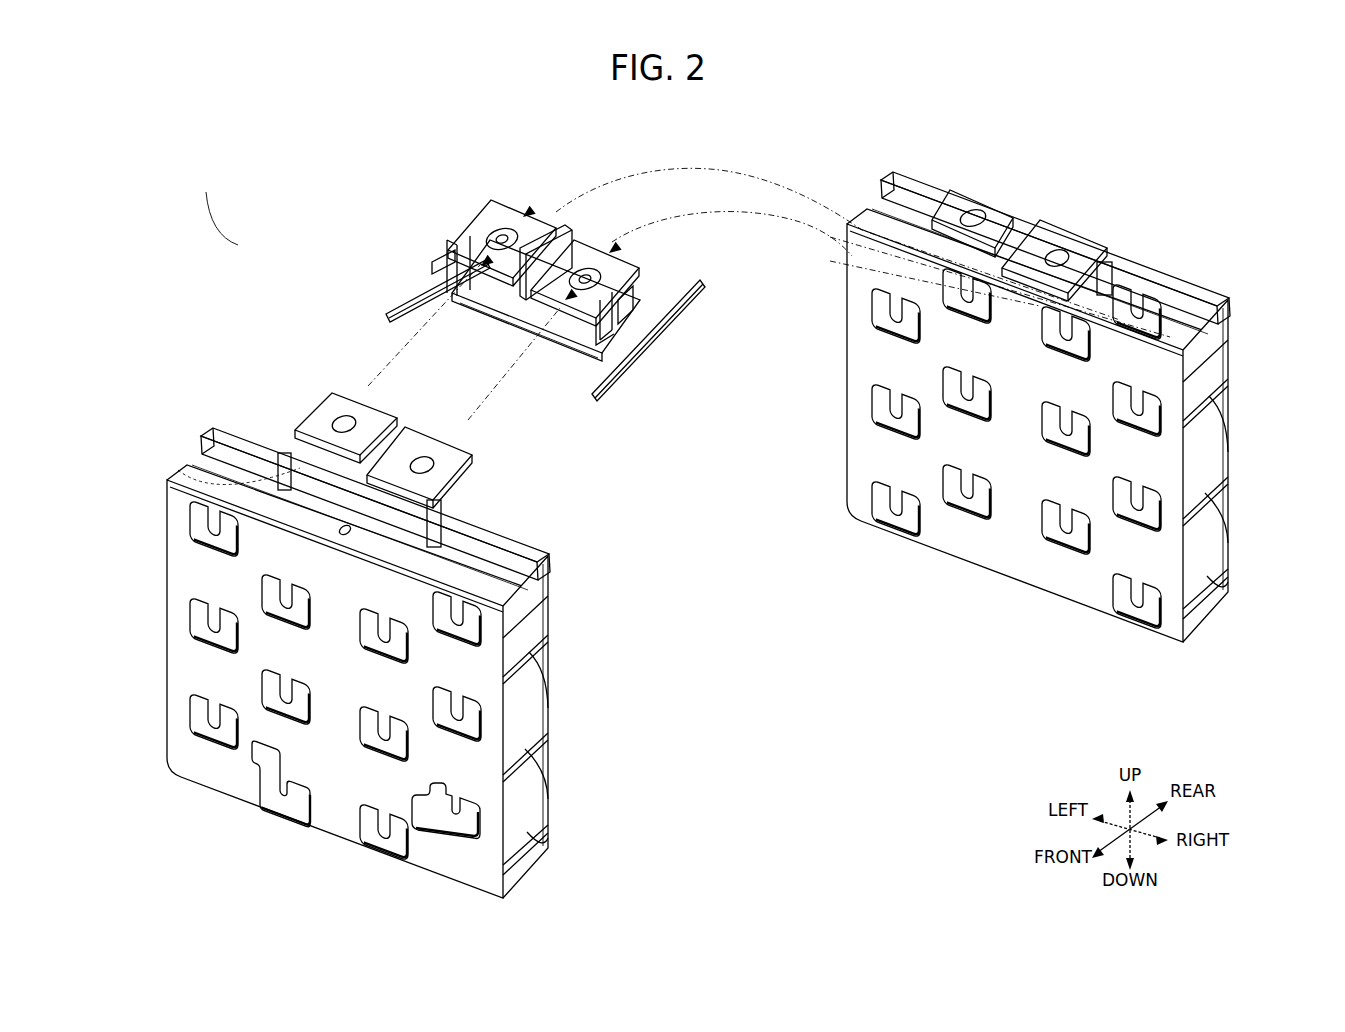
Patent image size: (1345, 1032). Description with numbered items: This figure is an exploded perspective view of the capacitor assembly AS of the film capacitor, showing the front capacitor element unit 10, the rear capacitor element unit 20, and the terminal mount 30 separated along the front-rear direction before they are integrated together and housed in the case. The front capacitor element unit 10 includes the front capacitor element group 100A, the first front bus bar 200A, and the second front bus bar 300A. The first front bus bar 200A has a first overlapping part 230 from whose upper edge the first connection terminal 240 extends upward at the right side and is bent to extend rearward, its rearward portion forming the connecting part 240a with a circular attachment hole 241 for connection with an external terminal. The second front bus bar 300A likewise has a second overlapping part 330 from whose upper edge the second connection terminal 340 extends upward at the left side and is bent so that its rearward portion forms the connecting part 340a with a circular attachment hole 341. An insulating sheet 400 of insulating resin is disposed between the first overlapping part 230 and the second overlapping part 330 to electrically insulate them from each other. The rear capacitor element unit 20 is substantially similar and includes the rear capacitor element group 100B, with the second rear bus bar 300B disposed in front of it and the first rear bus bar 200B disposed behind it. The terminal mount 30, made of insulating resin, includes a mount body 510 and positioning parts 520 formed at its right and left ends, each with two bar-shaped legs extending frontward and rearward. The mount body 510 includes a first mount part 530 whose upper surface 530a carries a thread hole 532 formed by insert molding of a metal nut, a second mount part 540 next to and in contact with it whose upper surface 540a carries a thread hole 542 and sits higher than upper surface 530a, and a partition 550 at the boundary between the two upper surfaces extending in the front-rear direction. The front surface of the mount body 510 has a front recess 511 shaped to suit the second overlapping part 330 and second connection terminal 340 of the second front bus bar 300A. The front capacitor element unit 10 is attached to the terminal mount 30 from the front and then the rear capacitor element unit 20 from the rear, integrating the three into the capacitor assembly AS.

The capacitor assembly AS is at (215, 207).
The front capacitor element unit 10 is at (566, 600).
The rear capacitor element unit 20 is at (1252, 322).
The terminal mount 30 is at (739, 276).
The front capacitor element group 100A is at (395, 681).
The rear capacitor element group 100B is at (1072, 420).
The first front bus bar 200A is at (213, 800).
The first rear bus bar 200B is at (1200, 255).
The first overlapping part 230 is at (325, 497).
The first connection terminal 240 is at (775, 349).
The connecting part 240a is at (468, 450).
The circular attachment hole 241 is at (421, 455).
The second front bus bar 300A is at (389, 527).
The second rear bus bar 300B is at (970, 575).
The second overlapping part 330 is at (1088, 278).
The second connection terminal 340 is at (632, 307).
The connecting part 340a is at (325, 417).
The circular attachment hole 341 is at (340, 415).
The insulating sheet 400 is at (210, 462).
The mount body 510 is at (490, 313).
The front recess 511 is at (530, 323).
The positioning part 520 is at (400, 300).
The first mount part 530 is at (636, 268).
The upper surface 530a is at (620, 270).
The thread hole 532 is at (590, 268).
The second mount part 540 is at (495, 222).
The upper surface 540a is at (535, 240).
The thread hole 542 is at (512, 230).
The partition 550 is at (552, 308).